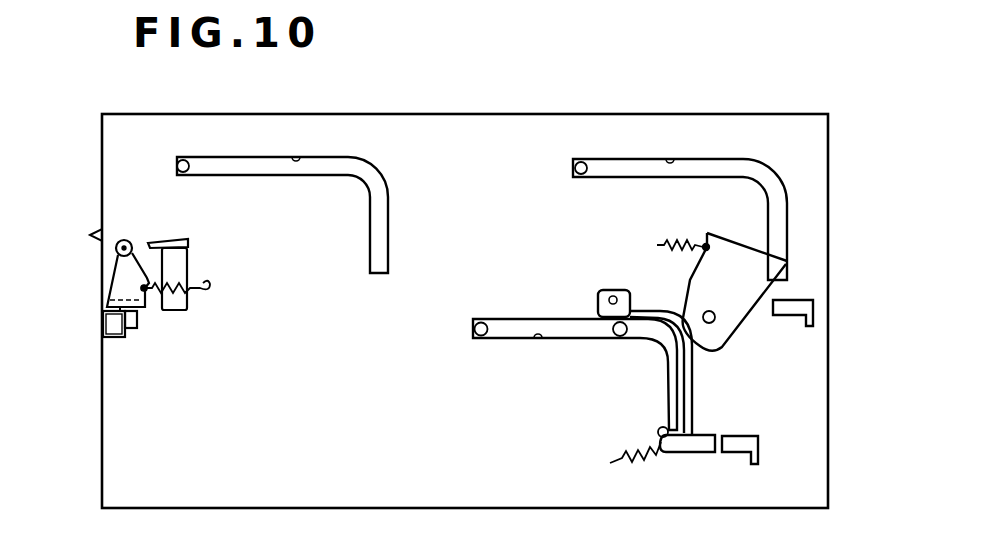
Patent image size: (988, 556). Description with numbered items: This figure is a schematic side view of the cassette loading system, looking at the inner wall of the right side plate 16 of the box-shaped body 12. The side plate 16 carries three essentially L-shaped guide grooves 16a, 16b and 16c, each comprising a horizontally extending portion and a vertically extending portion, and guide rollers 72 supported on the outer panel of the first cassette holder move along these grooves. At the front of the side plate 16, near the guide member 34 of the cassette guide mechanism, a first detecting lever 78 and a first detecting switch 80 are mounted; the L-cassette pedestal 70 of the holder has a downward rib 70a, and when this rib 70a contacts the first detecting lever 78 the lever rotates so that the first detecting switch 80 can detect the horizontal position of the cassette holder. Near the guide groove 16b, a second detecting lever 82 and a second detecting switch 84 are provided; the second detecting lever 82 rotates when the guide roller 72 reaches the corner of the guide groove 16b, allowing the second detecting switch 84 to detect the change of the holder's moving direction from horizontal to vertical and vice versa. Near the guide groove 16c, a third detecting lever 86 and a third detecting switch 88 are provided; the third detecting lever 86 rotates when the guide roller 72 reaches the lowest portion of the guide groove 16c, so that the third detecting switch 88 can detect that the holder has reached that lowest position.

The box-shaped body 12 is at (747, 113).
The side plate 16 is at (488, 142).
The guide groove 16a is at (296, 156).
The guide groove 16b is at (540, 340).
The guide groove 16c is at (672, 158).
The guide member 34 is at (90, 234).
The L-cassette pedestal 70 is at (170, 242).
The rib 70a is at (186, 258).
The guide roller 72 is at (188, 159).
The first detecting lever 78 is at (117, 282).
The first detecting switch 80 is at (105, 328).
The second detecting lever 82 is at (704, 452).
The second detecting switch 84 is at (738, 452).
The third detecting lever 86 is at (760, 295).
The third detecting switch 88 is at (788, 318).